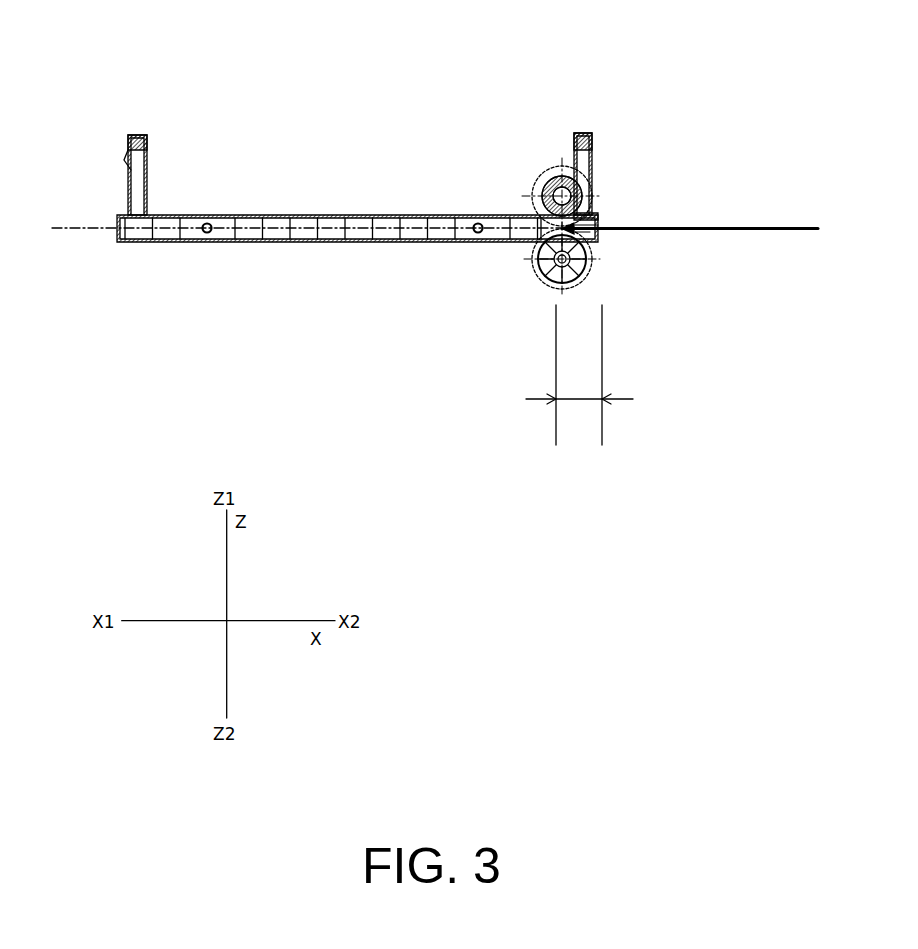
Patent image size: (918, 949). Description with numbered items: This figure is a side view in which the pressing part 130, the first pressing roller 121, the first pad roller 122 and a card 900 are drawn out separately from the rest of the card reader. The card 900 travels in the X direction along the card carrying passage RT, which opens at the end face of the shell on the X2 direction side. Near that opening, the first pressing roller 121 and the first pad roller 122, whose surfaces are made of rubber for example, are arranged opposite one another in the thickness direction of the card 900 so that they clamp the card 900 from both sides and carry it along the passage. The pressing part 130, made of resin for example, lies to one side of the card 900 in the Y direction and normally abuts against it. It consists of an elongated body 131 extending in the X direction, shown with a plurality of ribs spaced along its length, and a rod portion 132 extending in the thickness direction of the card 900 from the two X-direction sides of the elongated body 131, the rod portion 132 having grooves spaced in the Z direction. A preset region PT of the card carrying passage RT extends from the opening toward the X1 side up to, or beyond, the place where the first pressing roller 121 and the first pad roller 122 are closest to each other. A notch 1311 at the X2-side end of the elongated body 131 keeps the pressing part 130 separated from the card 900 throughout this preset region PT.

The pressing part 130 is at (362, 190).
The elongated body 131 is at (275, 215).
The rod portion 132 is at (590, 135).
The first pressing roller 121 is at (545, 172).
The first pad roller 122 is at (545, 287).
The notch 1311 is at (583, 235).
The card 900 is at (663, 230).
The preset region PT is at (579, 375).
The card carrying passage RT is at (293, 240).